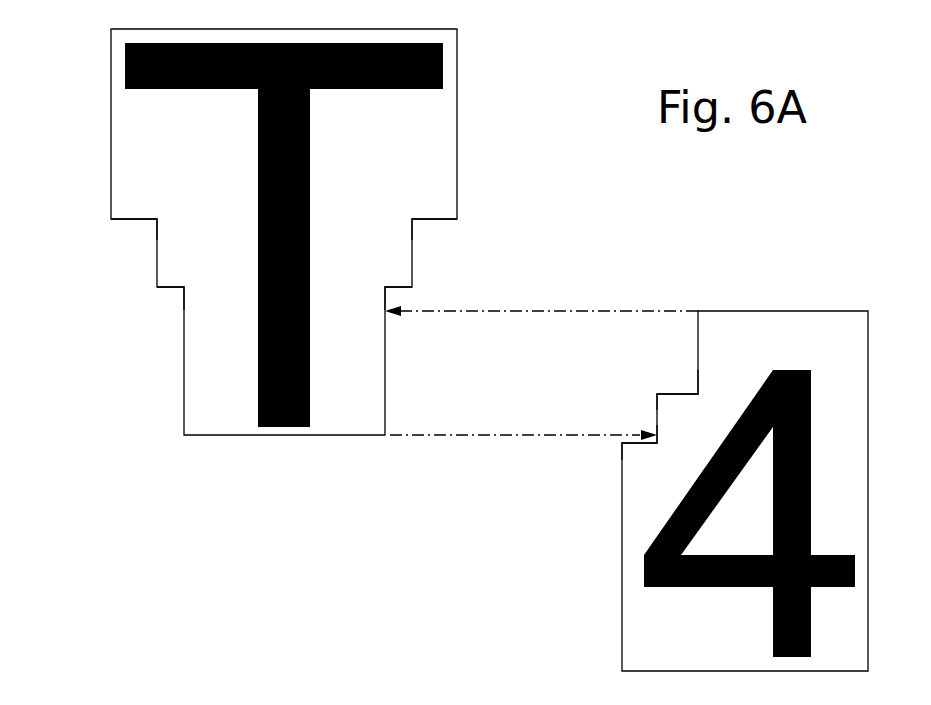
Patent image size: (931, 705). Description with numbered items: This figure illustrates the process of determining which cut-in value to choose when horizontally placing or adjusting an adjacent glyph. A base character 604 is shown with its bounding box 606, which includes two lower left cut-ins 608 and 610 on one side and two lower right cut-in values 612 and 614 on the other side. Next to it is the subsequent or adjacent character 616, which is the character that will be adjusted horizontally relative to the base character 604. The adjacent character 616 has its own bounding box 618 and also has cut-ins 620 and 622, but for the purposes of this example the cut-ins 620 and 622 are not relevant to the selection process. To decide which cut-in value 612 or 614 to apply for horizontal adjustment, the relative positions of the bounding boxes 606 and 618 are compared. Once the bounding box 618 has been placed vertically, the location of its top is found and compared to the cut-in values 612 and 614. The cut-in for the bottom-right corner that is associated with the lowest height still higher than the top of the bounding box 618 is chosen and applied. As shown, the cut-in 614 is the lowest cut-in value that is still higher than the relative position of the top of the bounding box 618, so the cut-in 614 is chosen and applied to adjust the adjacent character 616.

The character 604 is at (125, 70).
The bounding box 606 is at (111, 167).
The lower left cut-in 608 is at (139, 224).
The lower left cut-in 610 is at (167, 291).
The lower right cut-in value 612 is at (433, 225).
The lower right cut-in value 614 is at (400, 291).
The character 616 is at (645, 562).
The bounding box 618 is at (777, 311).
The cut-in 620 is at (674, 391).
The cut-in 622 is at (638, 450).